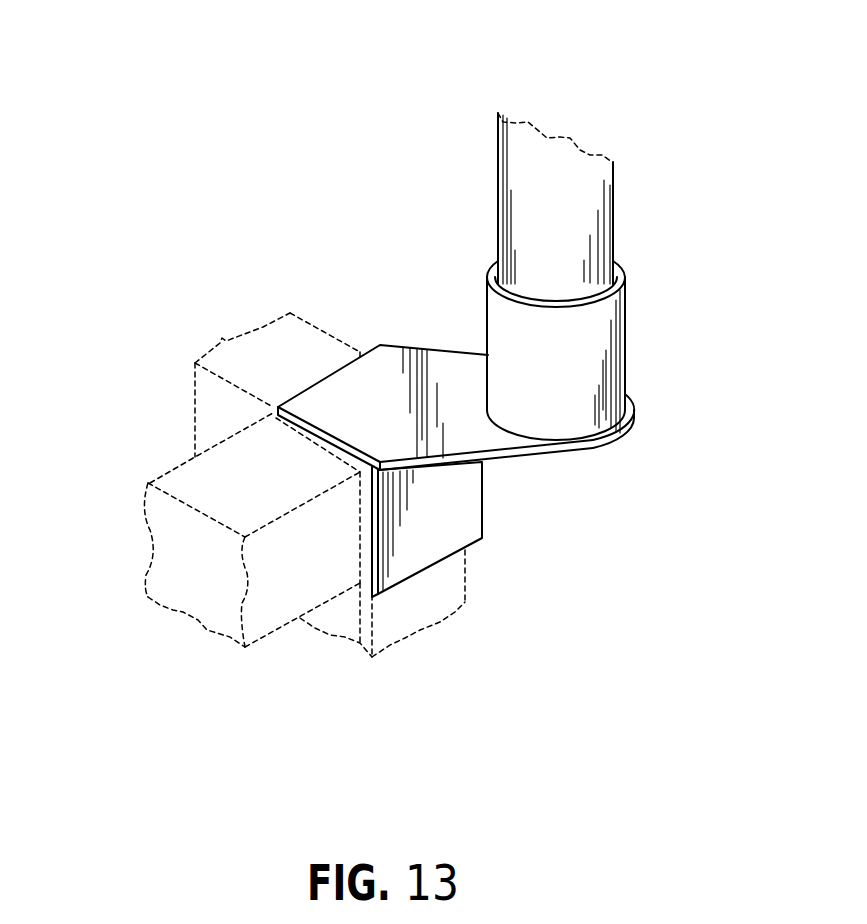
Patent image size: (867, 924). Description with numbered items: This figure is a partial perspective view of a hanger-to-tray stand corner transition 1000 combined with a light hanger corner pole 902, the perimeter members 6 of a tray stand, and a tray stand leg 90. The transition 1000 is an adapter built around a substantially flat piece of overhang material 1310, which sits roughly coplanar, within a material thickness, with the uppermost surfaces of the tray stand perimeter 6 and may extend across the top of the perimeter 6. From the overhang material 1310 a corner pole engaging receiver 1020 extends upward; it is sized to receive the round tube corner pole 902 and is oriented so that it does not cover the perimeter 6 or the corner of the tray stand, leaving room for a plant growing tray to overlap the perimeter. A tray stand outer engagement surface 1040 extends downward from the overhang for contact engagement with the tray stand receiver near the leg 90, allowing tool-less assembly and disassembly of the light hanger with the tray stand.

The hanger-to-tray stand corner transition 1000 is at (381, 133).
The overhang material 1310 is at (356, 412).
The corner pole engaging receiver 1020 is at (575, 356).
The corner transition tray stand outer engagement surface 1040 is at (437, 527).
The light hanger corner pole 902 is at (609, 200).
The perimeter member 6 is at (230, 363).
The leg 90 is at (327, 618).